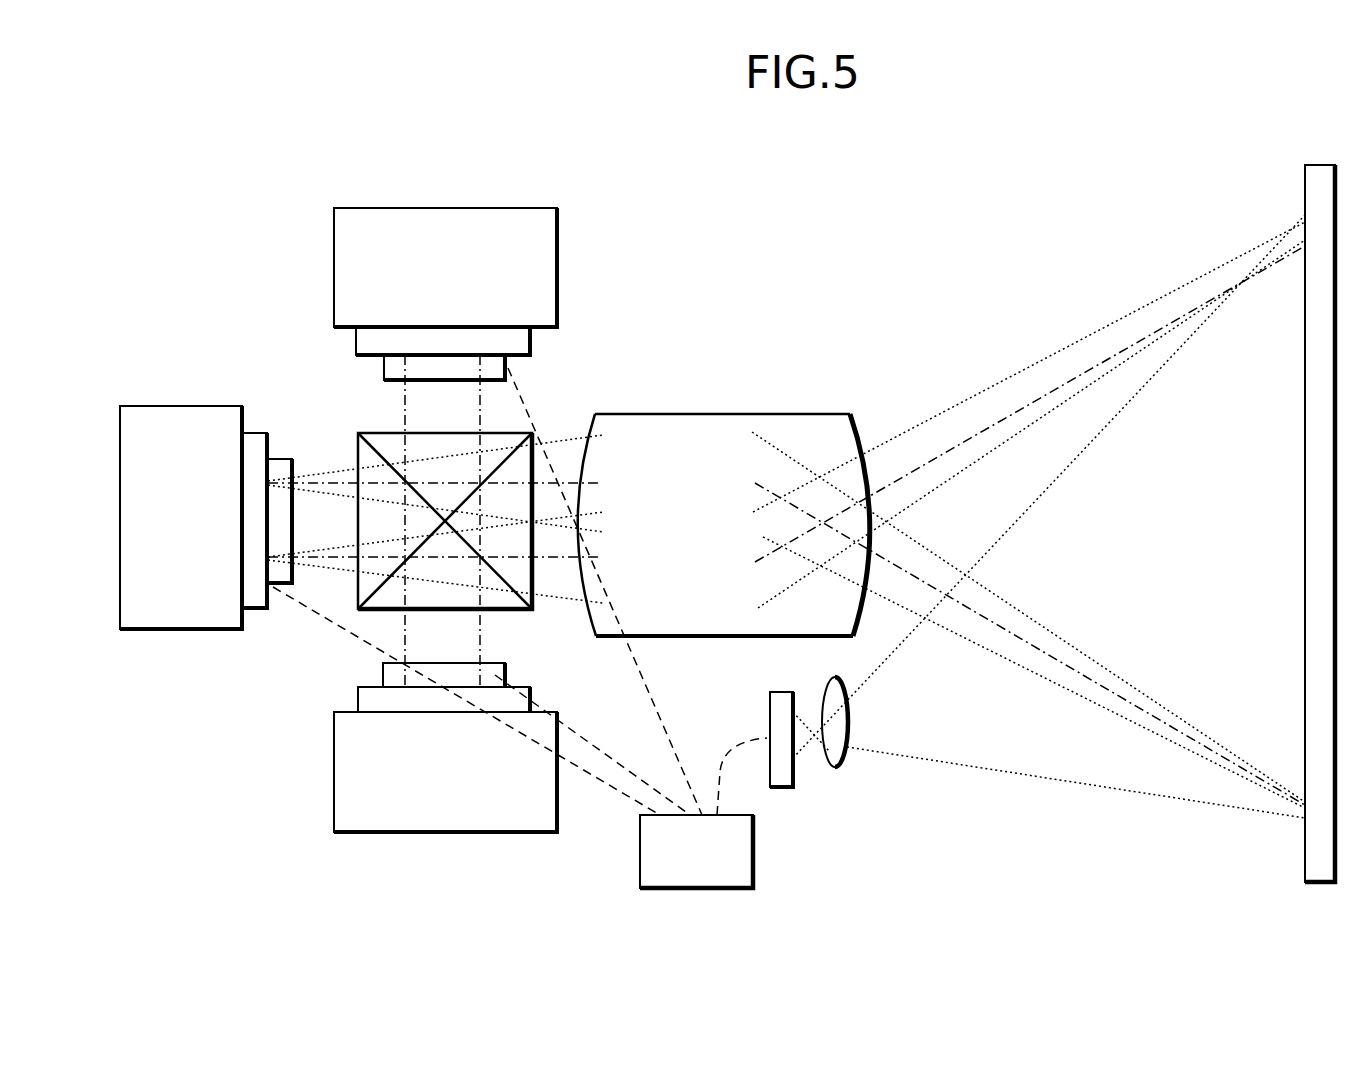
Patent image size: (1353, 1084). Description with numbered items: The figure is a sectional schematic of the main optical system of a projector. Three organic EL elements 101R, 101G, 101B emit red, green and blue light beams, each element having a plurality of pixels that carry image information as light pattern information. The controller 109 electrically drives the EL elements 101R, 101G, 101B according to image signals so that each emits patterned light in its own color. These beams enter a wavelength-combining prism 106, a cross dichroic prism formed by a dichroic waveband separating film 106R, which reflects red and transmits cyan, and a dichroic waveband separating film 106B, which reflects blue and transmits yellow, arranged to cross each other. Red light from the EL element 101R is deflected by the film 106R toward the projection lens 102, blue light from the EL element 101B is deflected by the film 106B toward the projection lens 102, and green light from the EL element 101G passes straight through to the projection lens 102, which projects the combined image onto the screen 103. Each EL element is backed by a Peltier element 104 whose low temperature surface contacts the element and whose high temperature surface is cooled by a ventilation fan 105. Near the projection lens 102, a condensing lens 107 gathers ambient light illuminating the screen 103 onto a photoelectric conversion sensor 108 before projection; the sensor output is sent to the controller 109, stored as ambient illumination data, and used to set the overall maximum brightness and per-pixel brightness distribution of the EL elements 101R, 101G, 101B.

The organic EL element 101R is at (490, 362).
The organic EL element 101G is at (275, 548).
The organic EL element 101B is at (487, 675).
The projection lens 102 is at (708, 420).
The screen 103 is at (1318, 172).
The Peltier element 104 is at (372, 340).
The ventilation fan 105 is at (438, 227).
The wavelength-combining prism 106 is at (449, 539).
The dichroic waveband separating film 106R is at (377, 450).
The dichroic waveband separating film 106B is at (378, 588).
The condensing lens 107 is at (838, 748).
The photoelectric conversion sensor 108 is at (785, 778).
The controller 109 is at (693, 875).